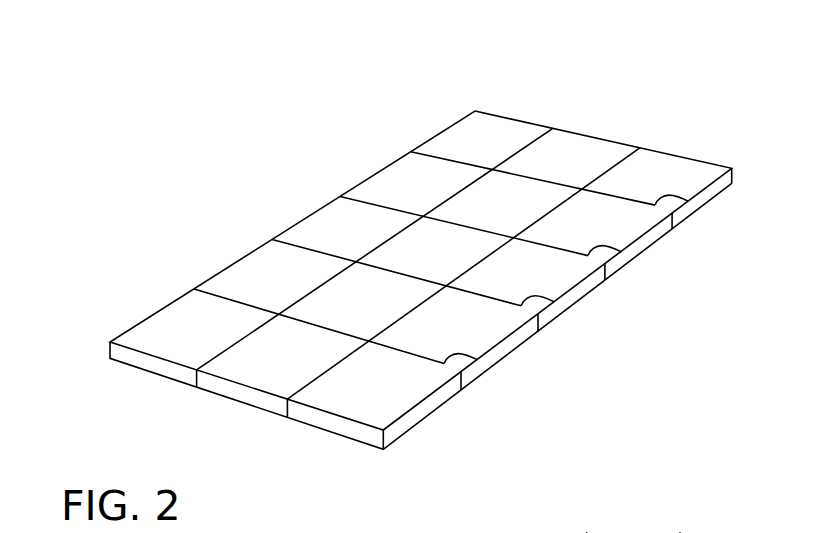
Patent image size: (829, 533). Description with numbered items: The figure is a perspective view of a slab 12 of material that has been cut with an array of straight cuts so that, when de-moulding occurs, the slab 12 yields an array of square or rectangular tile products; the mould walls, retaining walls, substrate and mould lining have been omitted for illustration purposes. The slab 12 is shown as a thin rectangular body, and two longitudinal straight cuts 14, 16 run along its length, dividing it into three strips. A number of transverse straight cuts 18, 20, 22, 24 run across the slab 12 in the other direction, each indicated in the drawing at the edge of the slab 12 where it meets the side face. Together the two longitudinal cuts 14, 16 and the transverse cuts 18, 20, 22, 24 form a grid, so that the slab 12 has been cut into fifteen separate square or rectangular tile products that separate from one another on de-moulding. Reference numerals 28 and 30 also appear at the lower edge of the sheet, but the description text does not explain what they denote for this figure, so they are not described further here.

The slab 12 is at (140, 194).
The longitudinal straight cut 14 is at (520, 140).
The longitudinal straight cut 16 is at (599, 162).
The transverse straight cut 18 is at (478, 357).
The transverse straight cut 20 is at (556, 303).
The transverse straight cut 22 is at (616, 251).
The transverse straight cut 24 is at (683, 205).
The element 28 is at (587, 532).
The element 30 is at (681, 525).